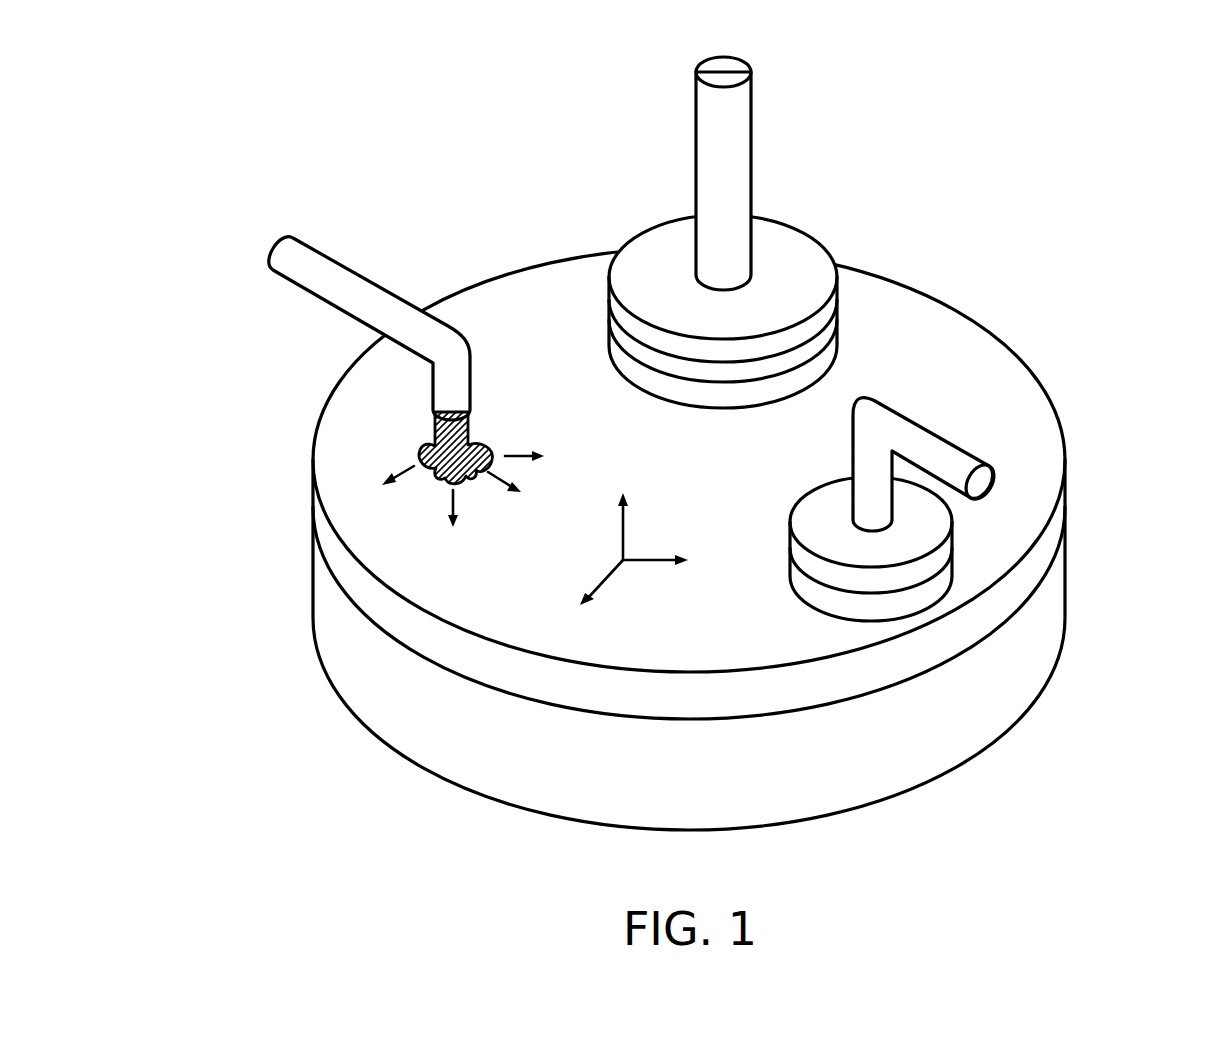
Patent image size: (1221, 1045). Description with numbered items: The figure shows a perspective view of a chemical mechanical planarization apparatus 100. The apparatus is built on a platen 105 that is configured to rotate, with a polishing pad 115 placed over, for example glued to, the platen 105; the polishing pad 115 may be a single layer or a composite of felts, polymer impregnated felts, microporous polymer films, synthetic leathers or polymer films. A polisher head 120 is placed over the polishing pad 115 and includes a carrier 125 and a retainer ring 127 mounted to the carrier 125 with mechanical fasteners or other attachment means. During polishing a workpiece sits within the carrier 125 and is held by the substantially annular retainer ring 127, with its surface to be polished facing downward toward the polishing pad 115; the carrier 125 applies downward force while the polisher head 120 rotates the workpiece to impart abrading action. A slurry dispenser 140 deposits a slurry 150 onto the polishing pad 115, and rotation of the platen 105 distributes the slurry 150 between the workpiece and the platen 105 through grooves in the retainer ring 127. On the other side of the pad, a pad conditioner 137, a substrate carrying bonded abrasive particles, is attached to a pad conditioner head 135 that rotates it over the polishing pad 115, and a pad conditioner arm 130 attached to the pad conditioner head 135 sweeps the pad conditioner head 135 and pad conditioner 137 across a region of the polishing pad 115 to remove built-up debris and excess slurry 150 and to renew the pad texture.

The chemical mechanical planarization apparatus 100 is at (230, 66).
The platen 105 is at (313, 588).
The polishing pad 115 is at (313, 503).
The polisher head 120 is at (776, 196).
The carrier 125 is at (837, 323).
The retainer ring 127 is at (835, 348).
The pad conditioner arm 130 is at (937, 447).
The pad conditioner head 135 is at (947, 547).
The pad conditioner 137 is at (947, 580).
The slurry dispenser 140 is at (322, 262).
The slurry 150 is at (437, 427).